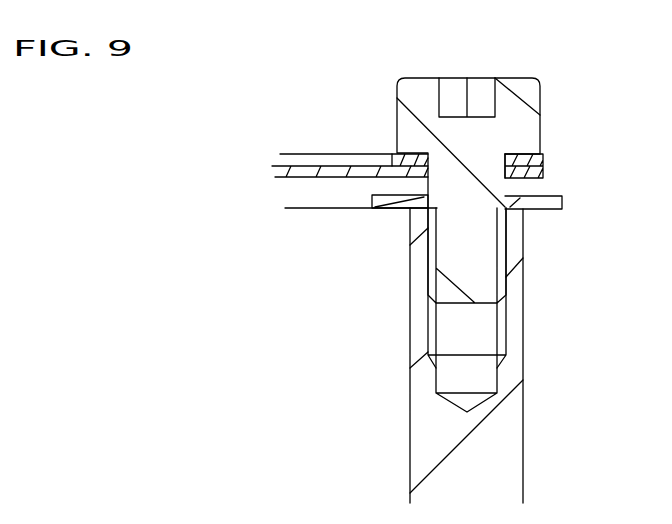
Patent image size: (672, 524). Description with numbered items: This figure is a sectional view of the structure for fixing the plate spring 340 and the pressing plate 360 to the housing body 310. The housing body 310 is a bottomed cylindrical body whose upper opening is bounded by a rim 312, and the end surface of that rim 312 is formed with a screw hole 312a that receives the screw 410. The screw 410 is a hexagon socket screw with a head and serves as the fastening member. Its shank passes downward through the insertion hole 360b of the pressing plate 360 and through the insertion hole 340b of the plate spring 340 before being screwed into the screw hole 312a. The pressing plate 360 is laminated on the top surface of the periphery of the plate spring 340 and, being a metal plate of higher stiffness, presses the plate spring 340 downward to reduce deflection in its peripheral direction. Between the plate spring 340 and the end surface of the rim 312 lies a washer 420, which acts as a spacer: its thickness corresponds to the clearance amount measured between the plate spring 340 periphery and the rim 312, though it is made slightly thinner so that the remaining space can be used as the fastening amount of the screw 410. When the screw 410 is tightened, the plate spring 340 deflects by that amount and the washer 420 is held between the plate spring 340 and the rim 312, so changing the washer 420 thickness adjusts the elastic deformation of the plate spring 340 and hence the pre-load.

The housing body 310 is at (523, 440).
The rim of the opening 312 is at (423, 206).
The screw hole 312a is at (437, 336).
The plate spring 340 is at (543, 180).
The insertion hole 340b is at (427, 170).
The pressing plate 360 is at (543, 155).
The insertion hole 360b is at (503, 156).
The screw 410 is at (540, 100).
The washer 420 is at (537, 210).